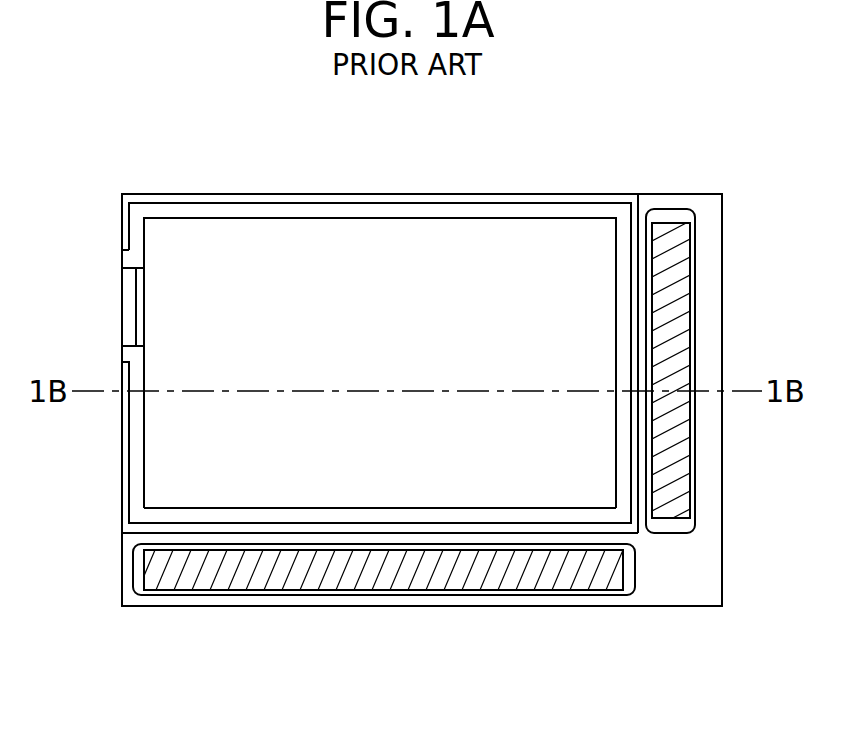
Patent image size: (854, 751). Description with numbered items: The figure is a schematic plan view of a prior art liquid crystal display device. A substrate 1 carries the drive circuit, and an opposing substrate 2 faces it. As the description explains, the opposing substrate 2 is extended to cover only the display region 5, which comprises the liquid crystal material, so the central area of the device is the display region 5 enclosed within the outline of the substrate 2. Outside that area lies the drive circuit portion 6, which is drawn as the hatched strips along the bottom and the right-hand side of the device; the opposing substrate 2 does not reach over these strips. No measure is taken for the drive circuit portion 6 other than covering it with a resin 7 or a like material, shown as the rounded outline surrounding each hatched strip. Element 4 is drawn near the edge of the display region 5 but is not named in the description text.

The substrate 1 is at (415, 607).
The substrate 2 is at (332, 527).
The sealing member 4 is at (193, 513).
The display region 5 is at (370, 232).
The drive circuit portion 6 is at (682, 512).
The resin 7 is at (690, 533).